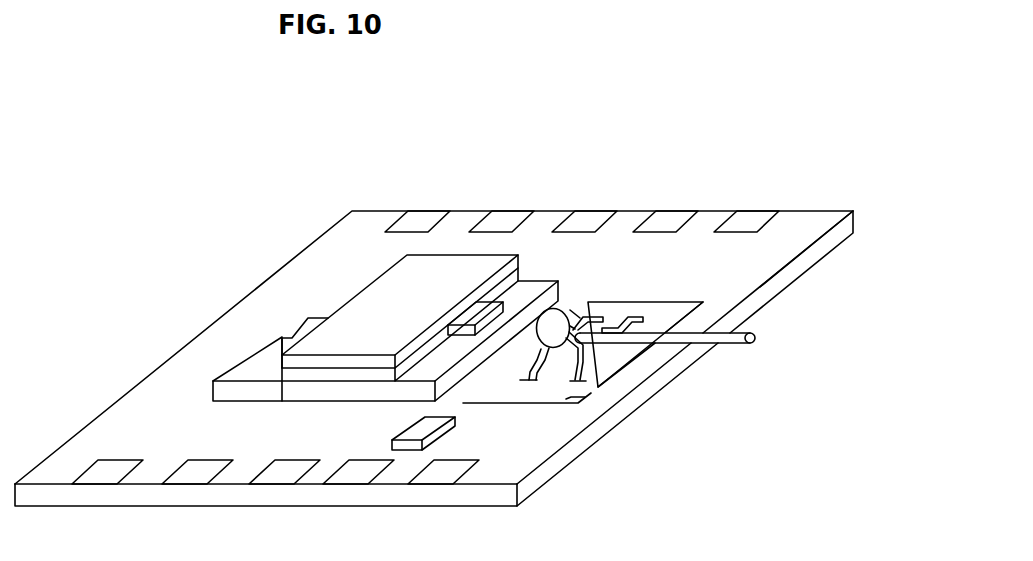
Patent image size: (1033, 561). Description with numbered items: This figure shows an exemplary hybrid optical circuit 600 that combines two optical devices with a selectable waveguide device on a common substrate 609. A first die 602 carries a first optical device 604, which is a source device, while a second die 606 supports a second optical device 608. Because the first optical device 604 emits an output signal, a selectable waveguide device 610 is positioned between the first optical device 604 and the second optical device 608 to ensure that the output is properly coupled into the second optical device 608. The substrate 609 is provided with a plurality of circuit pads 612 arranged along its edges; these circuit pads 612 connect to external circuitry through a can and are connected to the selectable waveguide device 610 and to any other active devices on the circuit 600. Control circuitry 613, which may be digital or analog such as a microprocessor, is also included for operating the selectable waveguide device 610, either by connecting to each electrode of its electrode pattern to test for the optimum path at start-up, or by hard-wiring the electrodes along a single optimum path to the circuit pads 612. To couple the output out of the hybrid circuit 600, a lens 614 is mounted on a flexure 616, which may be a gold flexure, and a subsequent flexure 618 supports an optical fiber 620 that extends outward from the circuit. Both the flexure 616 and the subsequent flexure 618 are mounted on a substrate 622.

The hybrid optical circuit 600 is at (758, 115).
The first die 602 is at (225, 391).
The first optical device 604 is at (302, 330).
The second die 606 is at (558, 308).
The second optical device 608 is at (521, 300).
The substrate 609 is at (778, 262).
The selectable waveguide device 610 is at (403, 277).
The circuit pads 612 is at (425, 208).
The control circuitry 613 is at (420, 412).
The lens 614 is at (571, 315).
The flexure 616 is at (520, 381).
The subsequent flexure 618 is at (586, 382).
The optical fiber 620 is at (730, 347).
The substrate 622 is at (581, 399).